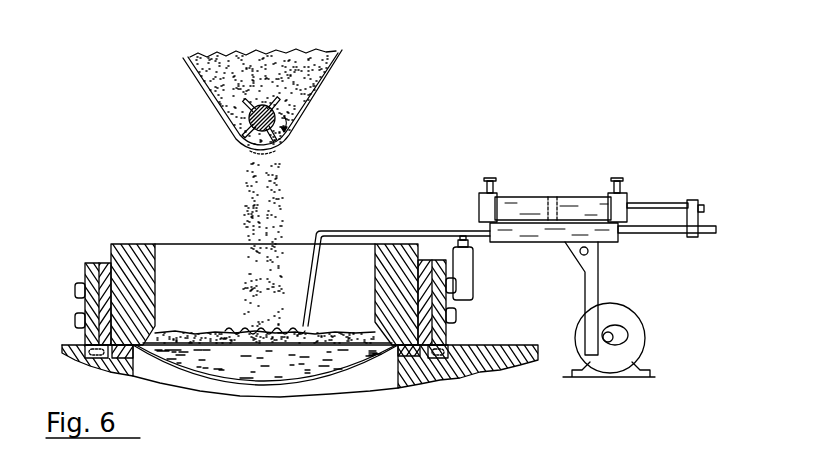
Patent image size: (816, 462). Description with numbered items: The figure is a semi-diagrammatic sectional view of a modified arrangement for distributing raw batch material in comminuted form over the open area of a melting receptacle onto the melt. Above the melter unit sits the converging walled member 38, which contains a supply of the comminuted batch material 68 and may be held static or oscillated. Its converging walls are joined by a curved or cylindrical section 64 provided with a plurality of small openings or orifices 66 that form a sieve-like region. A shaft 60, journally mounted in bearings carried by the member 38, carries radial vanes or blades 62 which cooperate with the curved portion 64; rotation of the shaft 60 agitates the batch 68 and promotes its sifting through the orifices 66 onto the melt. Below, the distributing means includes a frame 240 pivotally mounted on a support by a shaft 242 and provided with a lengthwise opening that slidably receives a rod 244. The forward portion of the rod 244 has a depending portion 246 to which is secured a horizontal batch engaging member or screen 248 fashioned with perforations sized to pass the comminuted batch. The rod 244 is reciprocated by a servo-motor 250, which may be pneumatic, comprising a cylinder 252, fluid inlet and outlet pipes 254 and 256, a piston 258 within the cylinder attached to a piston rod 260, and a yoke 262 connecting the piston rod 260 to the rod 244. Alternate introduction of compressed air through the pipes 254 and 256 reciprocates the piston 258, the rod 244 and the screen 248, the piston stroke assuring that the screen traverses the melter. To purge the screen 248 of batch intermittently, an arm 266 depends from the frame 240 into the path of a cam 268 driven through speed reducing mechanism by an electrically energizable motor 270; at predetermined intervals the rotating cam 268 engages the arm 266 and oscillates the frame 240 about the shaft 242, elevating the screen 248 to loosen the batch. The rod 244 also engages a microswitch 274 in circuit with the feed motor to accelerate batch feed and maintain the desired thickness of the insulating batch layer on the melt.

The converging walled member 38 is at (322, 90).
The shaft 60 is at (250, 117).
The radial vanes or blades 62 is at (245, 107).
The cylindrical or curved portion 64 is at (277, 145).
The openings or orifices 66 is at (255, 155).
The comminuted batch material 68 is at (328, 69).
The frame 240 is at (511, 243).
The shaft 242 is at (588, 251).
The rod or member 244 is at (352, 214).
The depending portion 246 is at (318, 276).
The batch engaging means or member 248 is at (236, 327).
The servo-motor 250 is at (510, 188).
The cylinder 252 is at (530, 192).
The fluid inlet and outlet pipe 254 is at (486, 184).
The fluid inlet and outlet pipe 256 is at (622, 181).
The piston 258 is at (545, 197).
The piston rod 260 is at (638, 203).
The yoke 262 is at (702, 222).
The arm 266 is at (598, 280).
The cam 268 is at (628, 333).
The electrically energizable motor 270 is at (632, 311).
The microswitch 274 is at (474, 265).